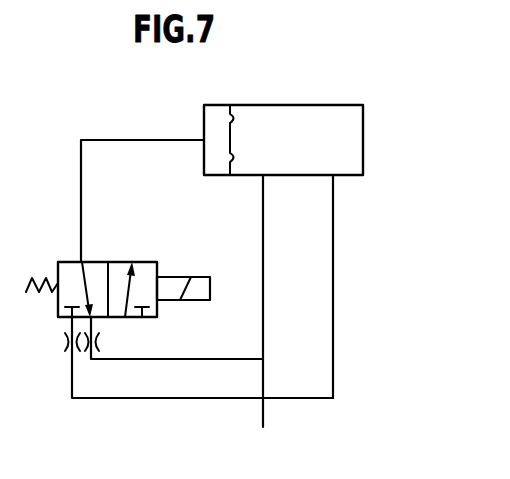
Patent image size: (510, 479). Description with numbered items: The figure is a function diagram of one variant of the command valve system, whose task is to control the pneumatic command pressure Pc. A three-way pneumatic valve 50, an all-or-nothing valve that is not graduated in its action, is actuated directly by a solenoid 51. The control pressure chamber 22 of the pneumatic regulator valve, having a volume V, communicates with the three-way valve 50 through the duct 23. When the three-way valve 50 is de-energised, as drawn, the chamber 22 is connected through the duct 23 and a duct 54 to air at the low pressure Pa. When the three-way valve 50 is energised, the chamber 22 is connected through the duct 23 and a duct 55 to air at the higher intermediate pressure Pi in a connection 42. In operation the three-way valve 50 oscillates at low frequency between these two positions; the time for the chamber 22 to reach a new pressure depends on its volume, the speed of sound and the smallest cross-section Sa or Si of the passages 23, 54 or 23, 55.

The control pressure chamber 22 is at (214, 105).
The duct 23 is at (175, 139).
The connection 42 is at (334, 188).
The three-way pneumatic valve 50 is at (125, 245).
The solenoid 51 is at (194, 277).
The duct 54 is at (185, 359).
The duct 55 is at (135, 398).